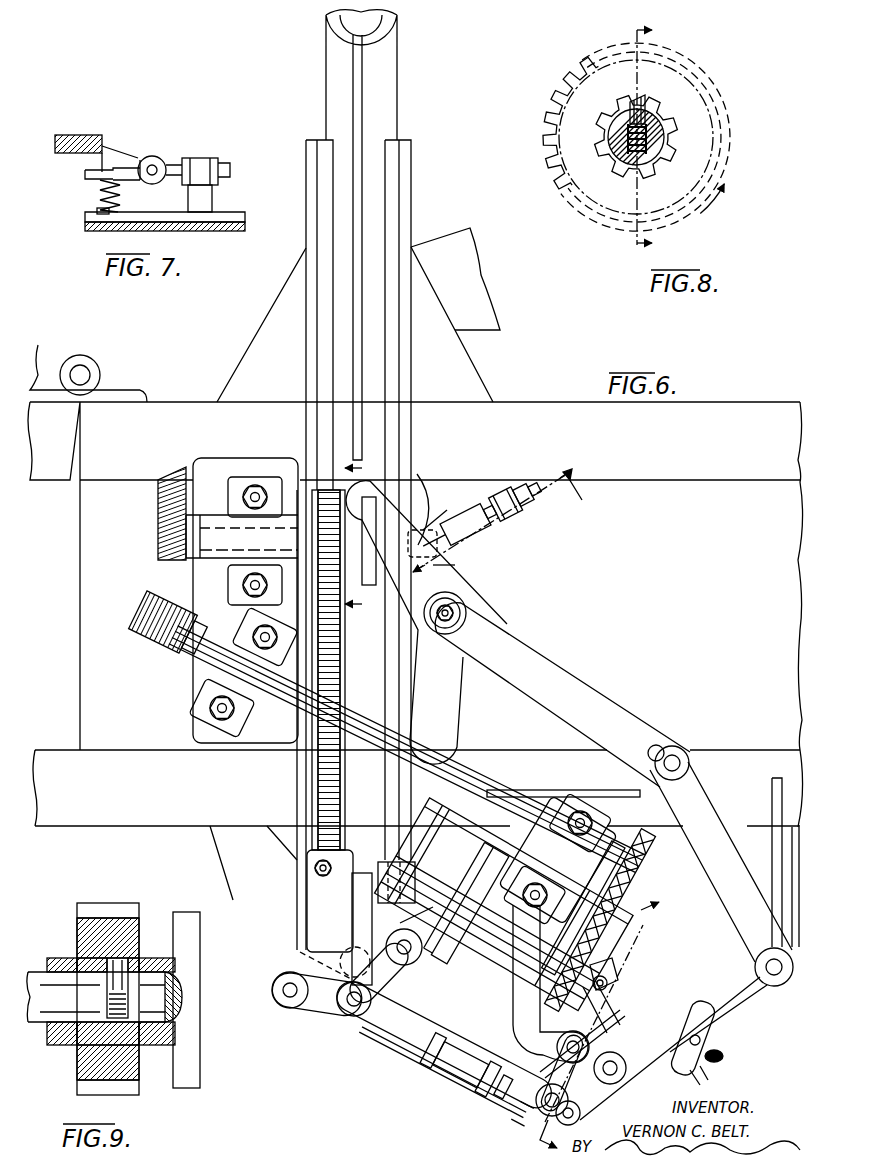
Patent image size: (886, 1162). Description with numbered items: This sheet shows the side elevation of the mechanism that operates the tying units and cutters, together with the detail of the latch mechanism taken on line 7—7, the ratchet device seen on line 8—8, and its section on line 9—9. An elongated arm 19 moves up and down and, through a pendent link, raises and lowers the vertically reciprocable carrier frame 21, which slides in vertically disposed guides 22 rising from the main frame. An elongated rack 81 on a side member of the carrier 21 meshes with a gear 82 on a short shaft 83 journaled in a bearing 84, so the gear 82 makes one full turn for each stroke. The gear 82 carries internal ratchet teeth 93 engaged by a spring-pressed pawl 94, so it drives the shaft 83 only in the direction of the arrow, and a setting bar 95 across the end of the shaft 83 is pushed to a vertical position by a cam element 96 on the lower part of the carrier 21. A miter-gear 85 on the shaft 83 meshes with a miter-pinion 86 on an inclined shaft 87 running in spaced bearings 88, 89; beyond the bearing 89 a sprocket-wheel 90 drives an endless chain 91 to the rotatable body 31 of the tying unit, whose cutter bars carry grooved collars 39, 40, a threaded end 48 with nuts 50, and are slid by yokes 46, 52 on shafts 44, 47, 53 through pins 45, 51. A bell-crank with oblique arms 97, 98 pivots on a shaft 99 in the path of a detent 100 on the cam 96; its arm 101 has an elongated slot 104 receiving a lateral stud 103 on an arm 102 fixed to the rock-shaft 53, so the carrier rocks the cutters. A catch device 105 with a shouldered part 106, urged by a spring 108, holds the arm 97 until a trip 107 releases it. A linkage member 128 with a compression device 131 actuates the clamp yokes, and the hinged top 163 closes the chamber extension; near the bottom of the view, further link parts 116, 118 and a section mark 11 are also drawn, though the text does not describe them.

In FIG. 6, the section line 7— 7 is at (501, 531).
In FIG. 6, the section line 8— 8 is at (377, 477).
In FIG. 8, the section line 9— 9 is at (668, 33).
In FIG. 6, the section line 11- 11 is at (684, 915).
In FIG. 6, the elongated arm 19 is at (478, 262).
In FIG. 6, the vertically reciprocable carrier frame 21 is at (388, 118).
In FIG. 6, the vertically disposed guides 22 is at (307, 160).
In FIG. 6, the body 31 is at (490, 958).
In FIG. 6, the grooved collar 39 is at (612, 972).
In FIG. 6, the grooved collar 40 is at (668, 1078).
In FIG. 6, the shaft 44 is at (616, 1058).
In FIG. 6, the pins 45 is at (608, 984).
In FIG. 6, the yoke 46 is at (608, 1005).
In FIG. 6, the shaft 47 is at (600, 1032).
In FIG. 6, the threaded end 48 is at (723, 1056).
In FIG. 6, the nuts 50 is at (708, 1078).
In FIG. 6, the pins 51 is at (688, 1034).
In FIG. 6, the yoke 52 is at (712, 1020).
In FIG. 6, the rock-shaft 53 is at (756, 968).
In FIG. 6, the elongated rack 81 is at (310, 802).
In FIG. 8, the gear 82 is at (720, 110).
In FIG. 9, the gear 82 is at (80, 938).
In FIG. 6, the gear 82 is at (318, 488).
In FIG. 8, the short shaft 83 is at (662, 139).
In FIG. 9, the short shaft 83 is at (36, 1025).
In FIG. 6, the short shaft 83 is at (226, 525).
In FIG. 6, the bearing 84 is at (218, 562).
In FIG. 6, the miter-gear 85 is at (165, 530).
In FIG. 6, the miter-pinion 86 is at (145, 620).
In FIG. 6, the inclined shaft 87 is at (358, 728).
In FIG. 6, the bearing 88 is at (196, 680).
In FIG. 6, the bearing 89 is at (552, 812).
In FIG. 6, the sprocket-wheel 90 is at (612, 853).
In FIG. 6, the endless chain 91 is at (620, 940).
In FIG. 8, the internal ratchet teeth 93 is at (625, 175).
In FIG. 9, the internal ratchet teeth 93 is at (78, 1050).
In FIG. 8, the spring-pressed pawl 94 is at (634, 110).
In FIG. 9, the spring-pressed pawl 94 is at (134, 948).
In FIG. 9, the bar 95 is at (182, 912).
In FIG. 6, the bar 95 is at (378, 497).
In FIG. 6, the cam element 96 is at (352, 895).
In FIG. 7, the oblique arm 97 is at (63, 135).
In FIG. 6, the oblique arm 97 is at (456, 565).
In FIG. 6, the oblique arm 98 is at (458, 700).
In FIG. 6, the shaft 99 is at (467, 612).
In FIG. 6, the detent 100 is at (420, 910).
In FIG. 6, the arm 101 is at (578, 668).
In FIG. 6, the arm 102 is at (722, 863).
In FIG. 6, the lateral stud 103 is at (678, 760).
In FIG. 6, the elongated slot 104 is at (657, 745).
In FIG. 7, the catch device 105 is at (147, 157).
In FIG. 6, the catch device 105 is at (468, 495).
In FIG. 7, the shouldered part 106 is at (86, 174).
In FIG. 6, the shouldered part 106 is at (418, 520).
In FIG. 6, the trip 107 is at (380, 862).
In FIG. 7, the spring 108 is at (100, 194).
In FIG. 6, the rod 116 is at (415, 1035).
In FIG. 6, the roller 118 is at (541, 1110).
In FIG. 6, the linkage member 128 is at (432, 1018).
In FIG. 6, the compression devices 131 is at (504, 1090).
In FIG. 6, the hinged top 163 is at (38, 364).